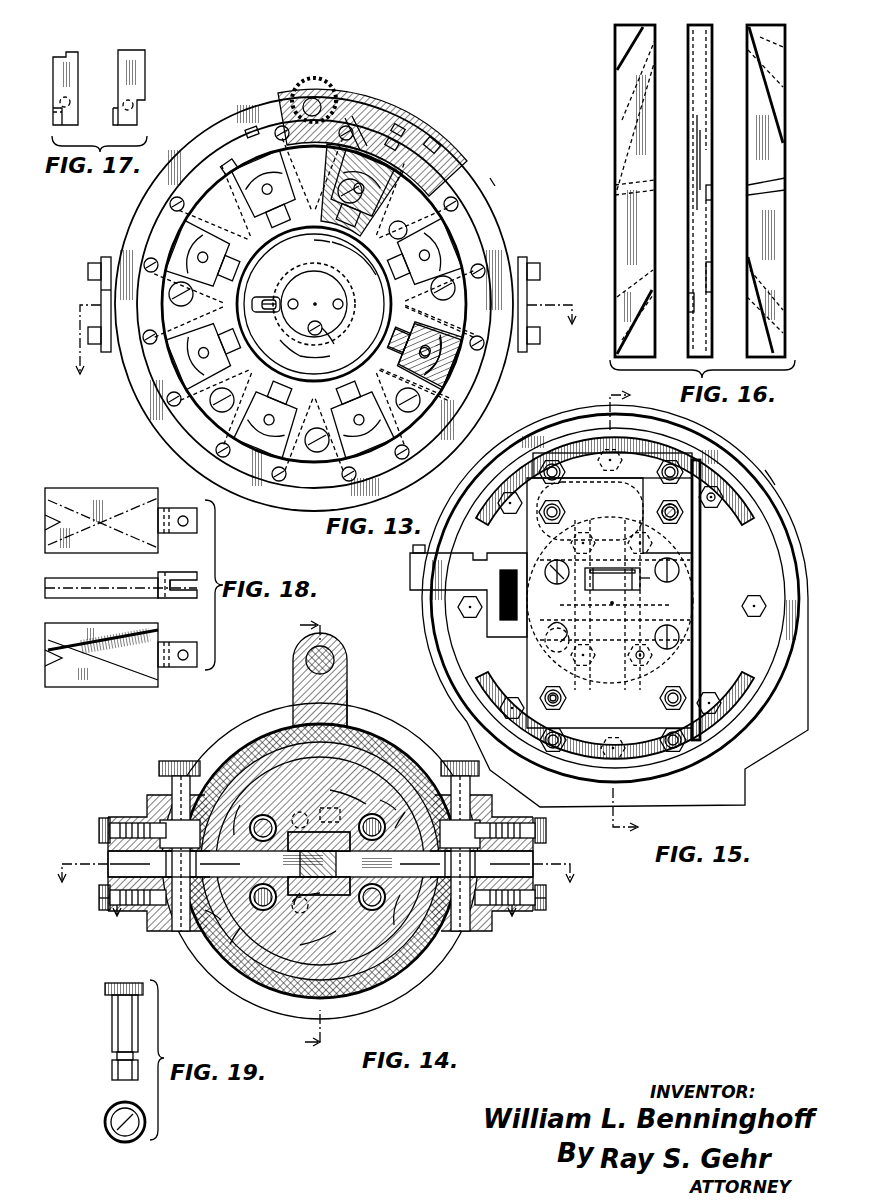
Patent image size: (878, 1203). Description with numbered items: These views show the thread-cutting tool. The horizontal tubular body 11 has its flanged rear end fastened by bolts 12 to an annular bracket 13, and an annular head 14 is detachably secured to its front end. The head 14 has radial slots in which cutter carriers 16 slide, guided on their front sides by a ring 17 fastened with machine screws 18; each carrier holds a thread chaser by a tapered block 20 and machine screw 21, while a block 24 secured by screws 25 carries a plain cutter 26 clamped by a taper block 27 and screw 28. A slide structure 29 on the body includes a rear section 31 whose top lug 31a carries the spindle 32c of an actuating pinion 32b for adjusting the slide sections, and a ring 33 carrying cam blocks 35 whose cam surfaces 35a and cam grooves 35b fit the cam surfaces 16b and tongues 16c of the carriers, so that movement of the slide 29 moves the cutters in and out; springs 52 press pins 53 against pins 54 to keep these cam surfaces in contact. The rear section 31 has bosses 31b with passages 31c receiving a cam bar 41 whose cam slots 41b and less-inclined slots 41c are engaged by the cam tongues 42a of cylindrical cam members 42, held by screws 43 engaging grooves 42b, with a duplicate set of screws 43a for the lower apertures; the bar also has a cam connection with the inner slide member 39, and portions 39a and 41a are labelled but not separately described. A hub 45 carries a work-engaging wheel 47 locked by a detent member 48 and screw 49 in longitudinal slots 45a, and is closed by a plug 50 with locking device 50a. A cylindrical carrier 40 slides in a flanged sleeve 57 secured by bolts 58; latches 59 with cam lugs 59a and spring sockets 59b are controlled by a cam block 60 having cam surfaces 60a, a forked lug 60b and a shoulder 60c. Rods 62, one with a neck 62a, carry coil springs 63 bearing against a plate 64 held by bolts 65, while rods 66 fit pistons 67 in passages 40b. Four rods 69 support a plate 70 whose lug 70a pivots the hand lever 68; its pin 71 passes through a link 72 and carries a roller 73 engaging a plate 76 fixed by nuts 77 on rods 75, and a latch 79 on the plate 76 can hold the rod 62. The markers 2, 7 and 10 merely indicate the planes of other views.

In FIG. 13, the section line 2- 2 is at (327, 352).
In FIG. 14, the section line 2- 2 is at (318, 874).
In FIG. 13, the brake mechanism 7 is at (494, 182).
In FIG. 15, the brake mechanism 7 is at (760, 470).
In FIG. 13, the section line 10- 10 is at (316, 80).
In FIG. 16, the section line 10- 10 is at (632, 408).
In FIG. 15, the section line 10- 10 is at (638, 813).
In FIG. 14, the section line 10- 10 is at (297, 835).
In FIG. 14, the tubular body 11 is at (410, 976).
In FIG. 15, the bolts 12 is at (738, 494).
In FIG. 15, the annular upstanding bracket 13 is at (530, 430).
In FIG. 13, the annular head 14 is at (442, 154).
In FIG. 13, the cutter carriers 16 is at (212, 158).
In FIG. 13, the cam surface 16b is at (434, 140).
In FIG. 13, the tongue 16c is at (226, 159).
In FIG. 13, the ring 17 is at (468, 199).
In FIG. 13, the machine screws 18 is at (180, 438).
In FIG. 13, the tapered block 20 is at (319, 252).
In FIG. 13, the machine screw 21 is at (316, 354).
In FIG. 13, the block 24 is at (346, 274).
In FIG. 13, the screws 25 is at (361, 260).
In FIG. 13, the plain cutter 26 is at (341, 253).
In FIG. 13, the taper block 27 is at (302, 264).
In FIG. 13, the screw 28 is at (301, 354).
In FIG. 13, the slide structure 29 is at (140, 217).
In FIG. 14, the slide structure 29 is at (240, 720).
In FIG. 14, the rear section 31 is at (362, 1000).
In FIG. 14, the lug 31a is at (348, 676).
In FIG. 13, the bosses 31b is at (100, 296).
In FIG. 14, the bosses 31b is at (147, 927).
In FIG. 14, the passages 31c is at (108, 843).
In FIG. 13, the actuating pinion 32b is at (326, 96).
In FIG. 13, the spindle 32c is at (322, 80).
In FIG. 14, the spindle 32c is at (338, 654).
In FIG. 13, the ring 33 is at (130, 260).
In FIG. 13, the cam blocks 35 is at (272, 126).
In FIG. 13, the cam surface 35a is at (394, 140).
In FIG. 13, the cam groove 35b is at (252, 128).
In FIG. 14, the inner slide member 39 is at (316, 909).
In FIG. 14, the channel part 39a is at (299, 903).
In FIG. 14, the cylindrical carrier 40 is at (354, 748).
In FIG. 14, the passages 40b is at (333, 866).
In FIG. 16, the cam bar 41 is at (623, 157).
In FIG. 14, the cam bar 41 is at (312, 828).
In FIG. 16, the shaft key 41a is at (616, 182).
In FIG. 14, the shaft key 41a is at (310, 856).
In FIG. 16, the cam slots 41b is at (626, 54).
In FIG. 14, the cam slots 41b is at (92, 836).
In FIG. 16, the cam slots 41c is at (622, 106).
In FIG. 14, the cam slots 41c is at (110, 866).
In FIG. 14, the cylindrical cam member 42 is at (174, 764).
In FIG. 19, the cylindrical cam member 42 is at (112, 1018).
In FIG. 14, the cam tongue 42a is at (168, 799).
In FIG. 19, the cam tongue 42a is at (112, 1074).
In FIG. 14, the grooves 42b is at (160, 816).
In FIG. 19, the grooves 42b is at (116, 1056).
In FIG. 13, the screws 43 is at (88, 270).
In FIG. 14, the screws 43 is at (98, 822).
In FIG. 13, the securing screws 43a is at (88, 337).
In FIG. 14, the securing screws 43a is at (100, 910).
In FIG. 13, the hub 45 is at (348, 292).
In FIG. 13, the longitudinal slots 45a is at (292, 300).
In FIG. 13, the work-engaging wheel 47 is at (268, 240).
In FIG. 13, the latch or detent member 48 is at (268, 297).
In FIG. 13, the screw 49 is at (268, 312).
In FIG. 13, the plug 50 is at (330, 318).
In FIG. 13, the locking device 50a is at (322, 333).
In FIG. 13, the springs 52 is at (327, 178).
In FIG. 13, the pins 53 is at (352, 116).
In FIG. 13, the pins 54 is at (373, 112).
In FIG. 15, the flanged sleeve 57 is at (702, 558).
In FIG. 15, the bolts 58 is at (710, 620).
In FIG. 17, the latches 59 is at (72, 60).
In FIG. 17, the cam lugs 59a is at (56, 114).
In FIG. 17, the sockets 59b is at (62, 102).
In FIG. 18, the cam block 60 is at (100, 497).
In FIG. 14, the cam block 60 is at (304, 848).
In FIG. 18, the cam surfaces 60a is at (120, 510).
In FIG. 14, the cam surfaces 60a is at (341, 814).
In FIG. 18, the forked lug 60b is at (190, 502).
In FIG. 18, the shoulder 60c is at (158, 574).
In FIG. 15, the rods 62 is at (680, 570).
In FIG. 14, the rods 62 is at (325, 856).
In FIG. 15, the neck 62a is at (546, 641).
In FIG. 14, the coil spring 63 is at (324, 854).
In FIG. 15, the plate 64 is at (576, 499).
In FIG. 15, the bolts 65 is at (640, 534).
In FIG. 15, the rods or bolts 66 is at (716, 648).
In FIG. 14, the rods or bolts 66 is at (303, 851).
In FIG. 14, the sleeve-like pistons 67 is at (325, 871).
In FIG. 15, the manual lever 68 is at (407, 576).
In FIG. 15, the rods 69 is at (684, 470).
In FIG. 15, the plate 70 is at (694, 588).
In FIG. 15, the lug 70a is at (626, 614).
In FIG. 15, the pin 71 is at (654, 654).
In FIG. 15, the link 72 is at (606, 568).
In FIG. 15, the roller 73 is at (642, 588).
In FIG. 15, the rods 75 is at (692, 441).
In FIG. 15, the plate 76 is at (656, 460).
In FIG. 15, the nuts 77 is at (568, 444).
In FIG. 15, the latch 79 is at (556, 686).